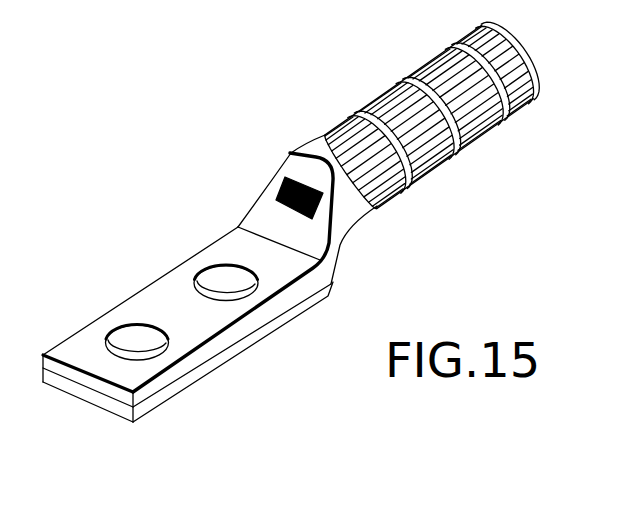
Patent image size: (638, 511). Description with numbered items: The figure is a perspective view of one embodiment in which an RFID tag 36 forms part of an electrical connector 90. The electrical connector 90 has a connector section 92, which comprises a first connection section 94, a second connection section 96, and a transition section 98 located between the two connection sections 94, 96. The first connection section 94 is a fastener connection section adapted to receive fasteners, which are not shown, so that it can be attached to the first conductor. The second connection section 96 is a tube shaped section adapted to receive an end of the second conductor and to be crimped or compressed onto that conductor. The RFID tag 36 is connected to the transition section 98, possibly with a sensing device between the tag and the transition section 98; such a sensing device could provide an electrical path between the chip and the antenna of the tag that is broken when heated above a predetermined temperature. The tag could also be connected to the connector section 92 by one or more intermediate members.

The electrical connector 90 is at (442, 267).
The connector section 92 is at (98, 315).
The first connection section 94 is at (87, 352).
The second connection section 96 is at (443, 161).
The transition section 98 is at (262, 220).
The RFID tag 36 is at (265, 195).